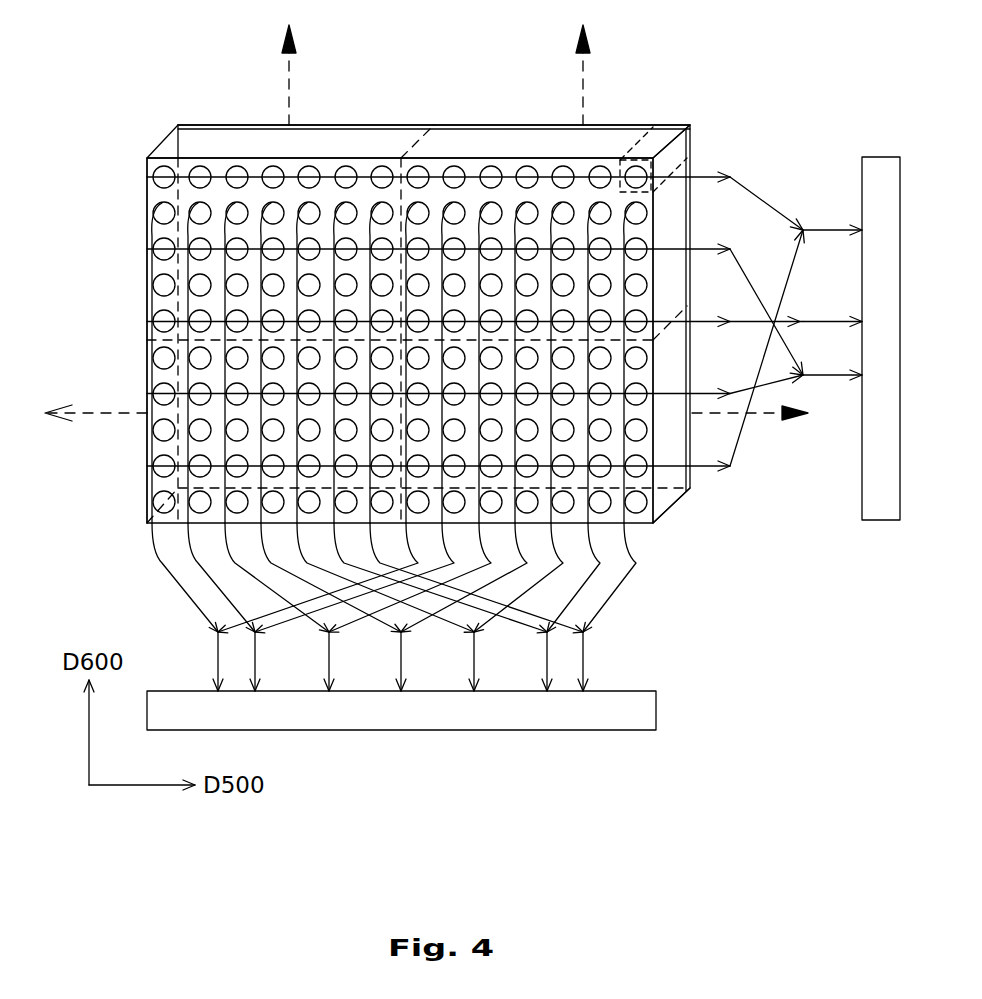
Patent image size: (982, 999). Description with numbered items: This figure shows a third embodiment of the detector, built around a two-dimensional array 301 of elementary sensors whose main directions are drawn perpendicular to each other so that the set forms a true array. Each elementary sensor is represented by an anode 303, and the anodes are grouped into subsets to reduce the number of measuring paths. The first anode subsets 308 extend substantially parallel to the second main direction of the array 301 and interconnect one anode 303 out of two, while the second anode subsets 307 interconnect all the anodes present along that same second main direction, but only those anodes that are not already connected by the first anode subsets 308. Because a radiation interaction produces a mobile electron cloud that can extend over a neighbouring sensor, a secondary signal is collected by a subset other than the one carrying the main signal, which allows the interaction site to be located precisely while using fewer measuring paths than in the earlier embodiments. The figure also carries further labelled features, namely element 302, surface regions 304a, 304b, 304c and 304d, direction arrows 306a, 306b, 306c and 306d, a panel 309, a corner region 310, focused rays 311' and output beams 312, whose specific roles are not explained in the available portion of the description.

The array 301 is at (147, 128).
The reflective side plate 302 is at (690, 490).
The anode 303 is at (566, 240).
The top surface first region 304a is at (355, 142).
The top surface second region 304b is at (473, 147).
The bottom side surface 304c is at (663, 513).
The left side surface 304d is at (147, 443).
The first light output direction 306a is at (287, 95).
The second light output direction 306b is at (583, 65).
The third light output direction 306c is at (762, 415).
The fourth light output direction 306d is at (92, 412).
The second anode subsets 307 is at (740, 446).
The first anode subsets 308 is at (590, 578).
The detector panel 309 is at (880, 172).
The corner unit cell 310 is at (657, 140).
The focused light rays 311' is at (832, 282).
The output light beams 312 is at (220, 645).